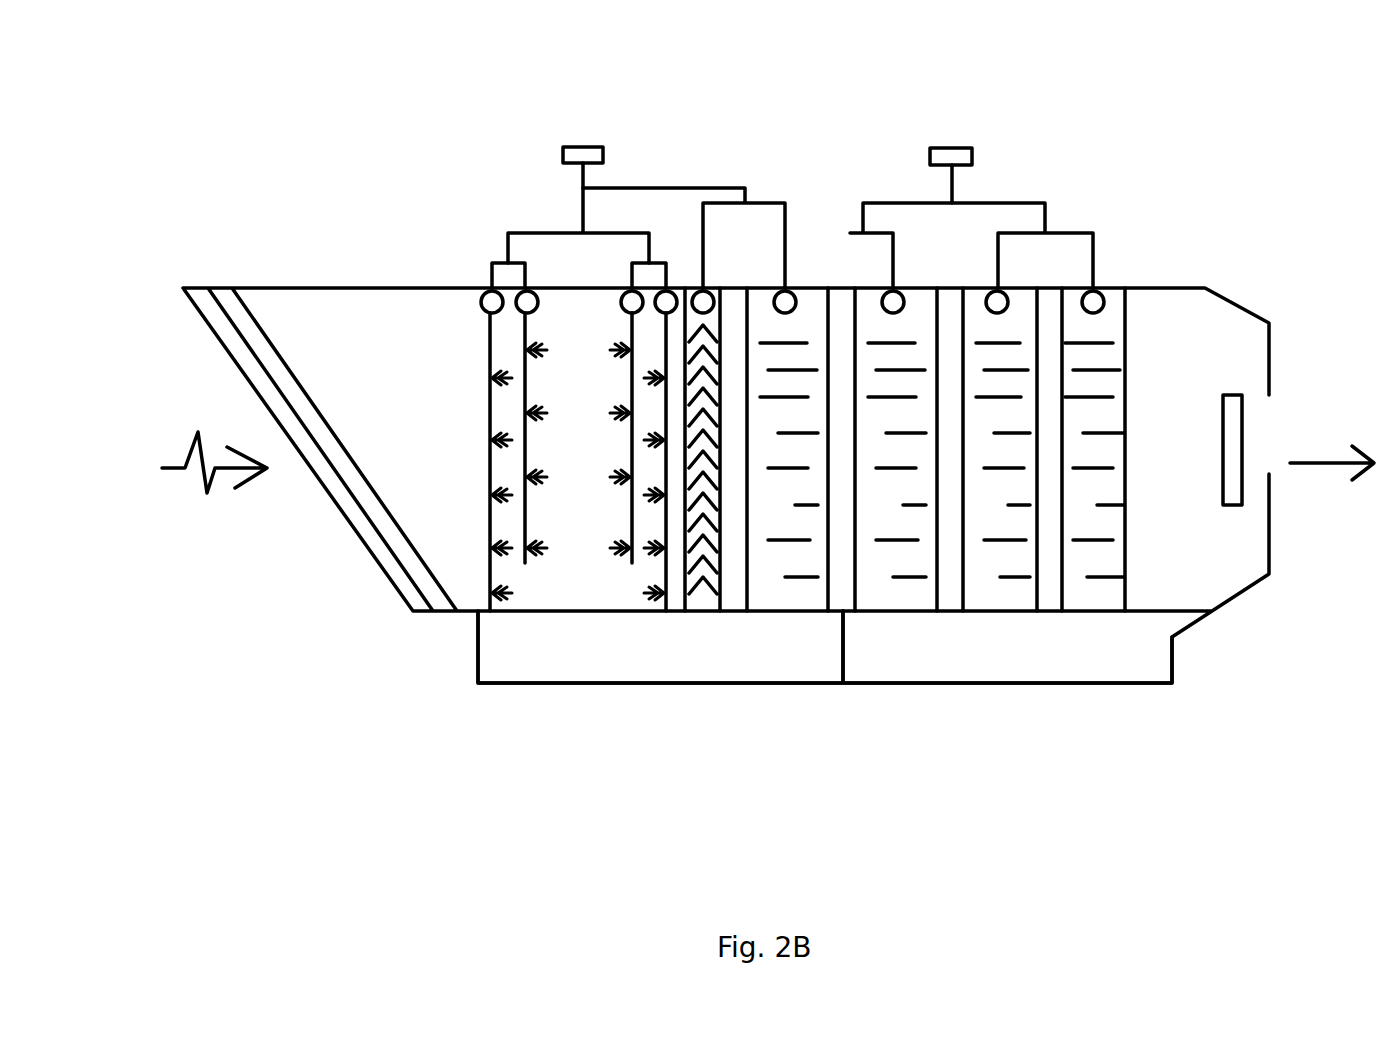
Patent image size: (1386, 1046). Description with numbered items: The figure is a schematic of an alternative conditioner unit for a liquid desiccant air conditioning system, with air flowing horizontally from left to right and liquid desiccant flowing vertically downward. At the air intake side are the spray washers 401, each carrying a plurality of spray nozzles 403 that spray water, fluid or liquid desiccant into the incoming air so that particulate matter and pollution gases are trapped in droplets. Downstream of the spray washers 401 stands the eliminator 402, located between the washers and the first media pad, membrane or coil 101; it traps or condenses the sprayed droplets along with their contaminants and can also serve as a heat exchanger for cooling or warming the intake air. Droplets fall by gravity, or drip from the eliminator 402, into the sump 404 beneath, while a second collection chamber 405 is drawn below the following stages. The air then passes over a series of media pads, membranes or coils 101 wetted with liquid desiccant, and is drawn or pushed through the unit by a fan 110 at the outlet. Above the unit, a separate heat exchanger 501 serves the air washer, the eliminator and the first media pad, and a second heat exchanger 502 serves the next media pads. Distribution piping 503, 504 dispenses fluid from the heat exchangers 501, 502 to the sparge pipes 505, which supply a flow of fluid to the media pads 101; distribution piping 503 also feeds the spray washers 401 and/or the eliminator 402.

The media pad 101 is at (1108, 286).
The fan 110 is at (1226, 395).
The spray washer 401 is at (483, 287).
The eliminator 402 is at (713, 284).
The spray nozzle 403 is at (508, 592).
The sump 404 is at (568, 685).
The second collection chamber 405 is at (1018, 685).
The heat exchanger 501 is at (562, 152).
The second heat exchanger 502 is at (973, 158).
The distribution piping 503 is at (650, 188).
The distribution piping 504 is at (1043, 203).
The sparge pipe 505 is at (790, 288).